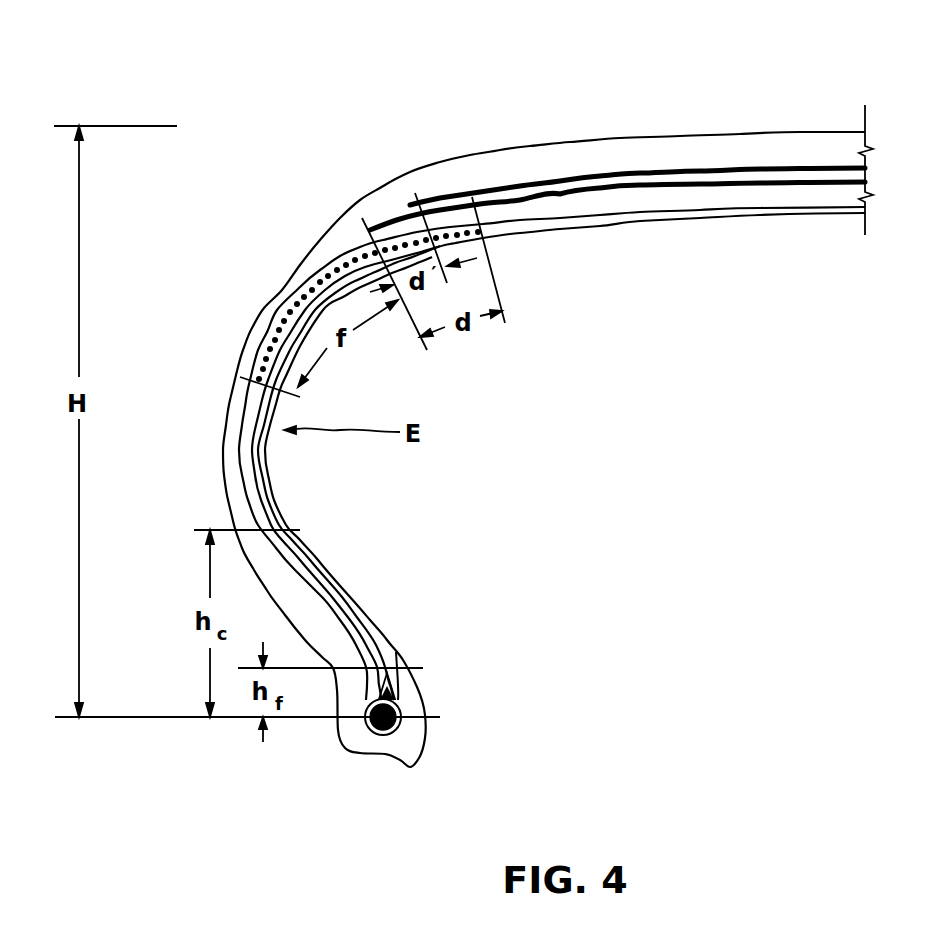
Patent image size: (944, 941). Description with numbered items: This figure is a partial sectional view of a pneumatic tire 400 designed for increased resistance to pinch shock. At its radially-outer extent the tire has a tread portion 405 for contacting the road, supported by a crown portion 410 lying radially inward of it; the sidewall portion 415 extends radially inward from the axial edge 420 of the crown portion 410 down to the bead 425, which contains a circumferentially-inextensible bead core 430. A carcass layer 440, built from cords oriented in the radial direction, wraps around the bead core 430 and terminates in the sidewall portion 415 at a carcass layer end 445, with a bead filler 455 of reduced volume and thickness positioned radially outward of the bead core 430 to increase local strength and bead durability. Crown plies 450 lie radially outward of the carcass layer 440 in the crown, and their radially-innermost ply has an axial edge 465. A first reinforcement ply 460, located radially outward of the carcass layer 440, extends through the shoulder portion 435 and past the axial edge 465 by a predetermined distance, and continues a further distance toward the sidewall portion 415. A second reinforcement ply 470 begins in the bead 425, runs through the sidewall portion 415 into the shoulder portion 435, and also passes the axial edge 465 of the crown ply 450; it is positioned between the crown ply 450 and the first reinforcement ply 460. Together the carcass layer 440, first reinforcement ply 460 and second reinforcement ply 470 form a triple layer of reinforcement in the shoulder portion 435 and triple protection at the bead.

The tire 400 is at (676, 438).
The tread portion 405 is at (598, 130).
The crown portion 410 is at (520, 160).
The sidewall portion 415 is at (231, 453).
The axial edge 420 is at (440, 112).
The bead 425 is at (402, 737).
The bead core 430 is at (396, 712).
The shoulder portion 435 is at (347, 173).
The carcass layer 440 is at (286, 512).
The carcass layer end 445 is at (347, 597).
The crown ply 450 is at (752, 165).
The bead filler 455 is at (388, 690).
The first reinforcement ply 460 is at (283, 312).
The axial edge 465 is at (365, 228).
The second reinforcement ply 470 is at (250, 503).